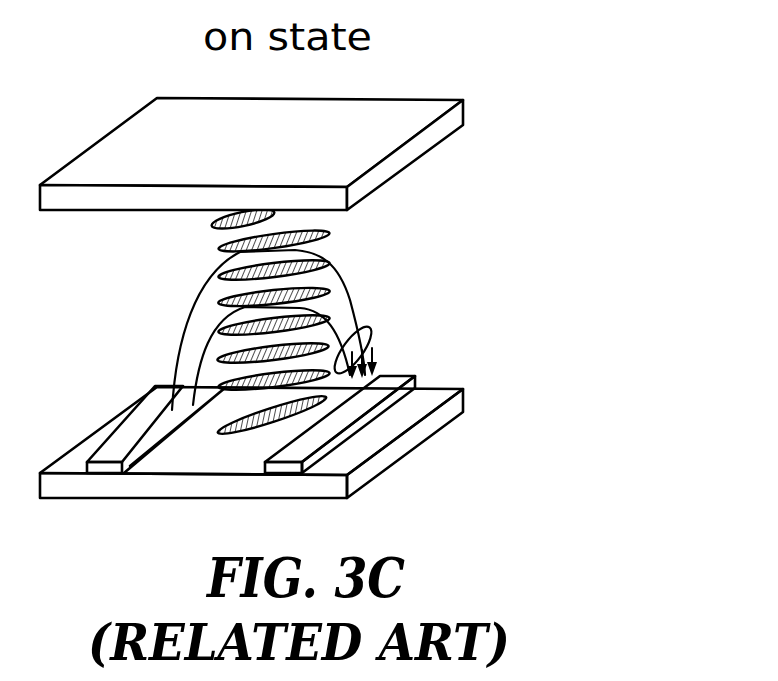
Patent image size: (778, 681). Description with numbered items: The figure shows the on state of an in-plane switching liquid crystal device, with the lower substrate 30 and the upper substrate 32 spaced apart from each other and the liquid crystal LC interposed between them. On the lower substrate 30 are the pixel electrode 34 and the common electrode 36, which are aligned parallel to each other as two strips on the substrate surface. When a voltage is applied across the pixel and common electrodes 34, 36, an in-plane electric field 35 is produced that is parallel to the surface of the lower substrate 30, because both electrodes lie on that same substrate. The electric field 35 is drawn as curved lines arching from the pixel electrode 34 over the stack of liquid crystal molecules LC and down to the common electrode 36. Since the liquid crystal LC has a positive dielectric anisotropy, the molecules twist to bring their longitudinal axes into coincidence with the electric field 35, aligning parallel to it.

The lower substrate 30 is at (463, 402).
The upper substrate 32 is at (460, 113).
The pixel electrode 34 is at (140, 425).
The common electrode 36 is at (400, 373).
The electric field 35 is at (375, 336).
The liquid crystal LC is at (338, 265).